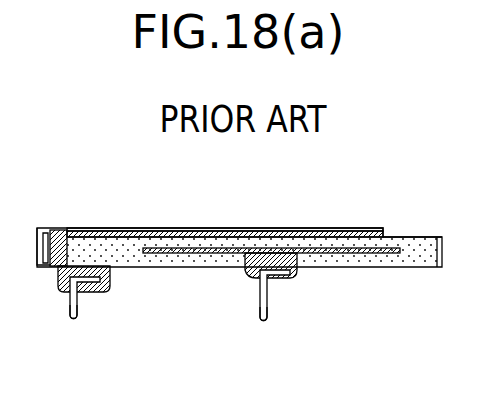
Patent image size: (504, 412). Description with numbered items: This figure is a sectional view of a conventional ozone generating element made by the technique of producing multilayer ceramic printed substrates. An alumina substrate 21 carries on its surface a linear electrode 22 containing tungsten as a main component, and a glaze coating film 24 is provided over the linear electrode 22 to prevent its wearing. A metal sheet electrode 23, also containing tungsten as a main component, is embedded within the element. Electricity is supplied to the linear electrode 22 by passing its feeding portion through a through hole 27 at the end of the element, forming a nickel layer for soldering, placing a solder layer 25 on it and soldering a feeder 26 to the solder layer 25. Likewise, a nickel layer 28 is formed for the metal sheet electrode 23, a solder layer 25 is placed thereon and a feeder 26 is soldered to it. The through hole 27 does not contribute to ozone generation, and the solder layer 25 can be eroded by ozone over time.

The alumina substrate 21 is at (314, 242).
The linear electrode 22 is at (263, 233).
The metal sheet electrode 23 is at (392, 250).
The glaze coating film 24 is at (224, 228).
The solder layer 25 is at (100, 292).
The feeder 26 is at (78, 313).
The through hole 27 is at (62, 237).
The nickel layer 28 is at (107, 282).